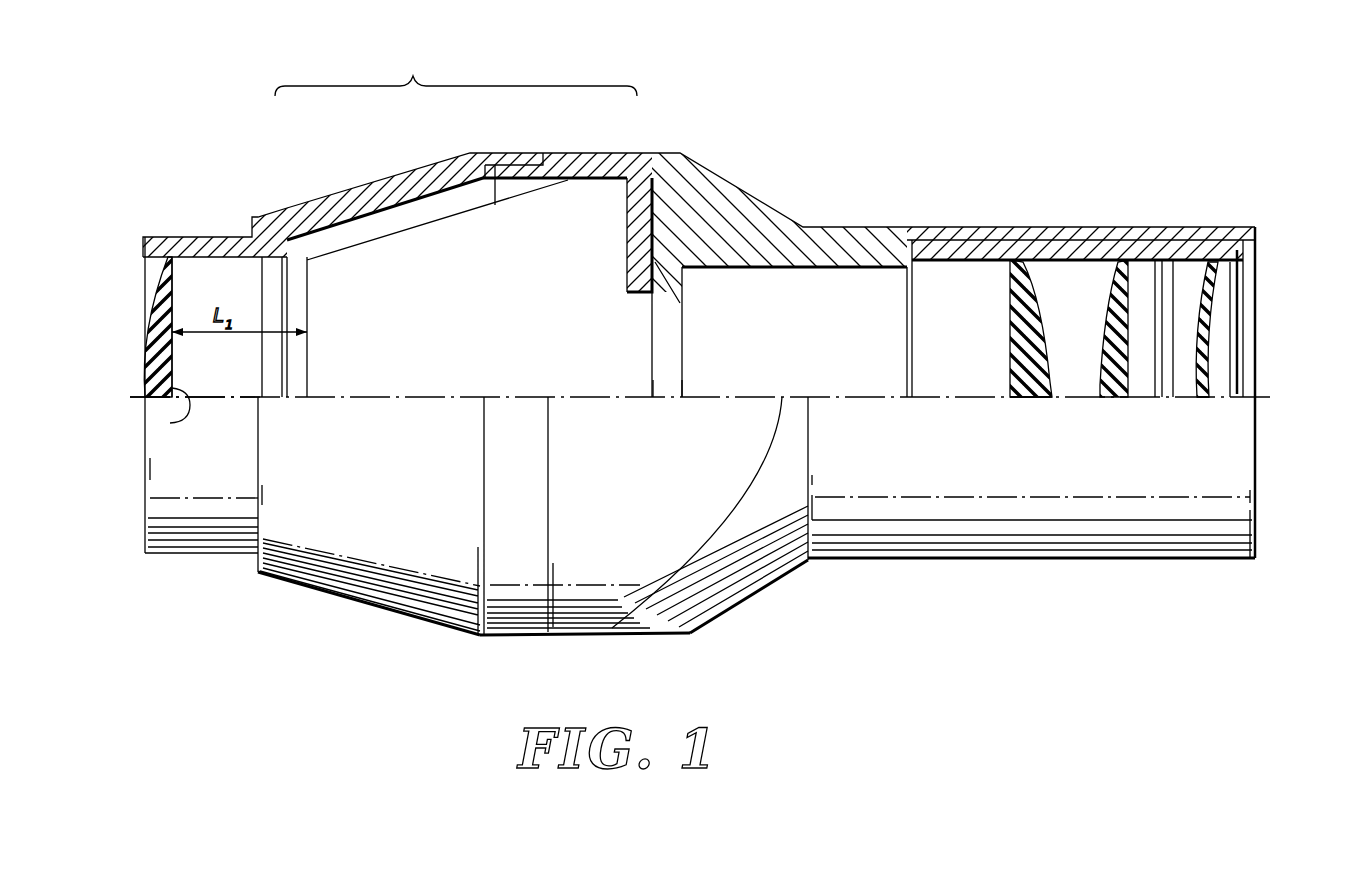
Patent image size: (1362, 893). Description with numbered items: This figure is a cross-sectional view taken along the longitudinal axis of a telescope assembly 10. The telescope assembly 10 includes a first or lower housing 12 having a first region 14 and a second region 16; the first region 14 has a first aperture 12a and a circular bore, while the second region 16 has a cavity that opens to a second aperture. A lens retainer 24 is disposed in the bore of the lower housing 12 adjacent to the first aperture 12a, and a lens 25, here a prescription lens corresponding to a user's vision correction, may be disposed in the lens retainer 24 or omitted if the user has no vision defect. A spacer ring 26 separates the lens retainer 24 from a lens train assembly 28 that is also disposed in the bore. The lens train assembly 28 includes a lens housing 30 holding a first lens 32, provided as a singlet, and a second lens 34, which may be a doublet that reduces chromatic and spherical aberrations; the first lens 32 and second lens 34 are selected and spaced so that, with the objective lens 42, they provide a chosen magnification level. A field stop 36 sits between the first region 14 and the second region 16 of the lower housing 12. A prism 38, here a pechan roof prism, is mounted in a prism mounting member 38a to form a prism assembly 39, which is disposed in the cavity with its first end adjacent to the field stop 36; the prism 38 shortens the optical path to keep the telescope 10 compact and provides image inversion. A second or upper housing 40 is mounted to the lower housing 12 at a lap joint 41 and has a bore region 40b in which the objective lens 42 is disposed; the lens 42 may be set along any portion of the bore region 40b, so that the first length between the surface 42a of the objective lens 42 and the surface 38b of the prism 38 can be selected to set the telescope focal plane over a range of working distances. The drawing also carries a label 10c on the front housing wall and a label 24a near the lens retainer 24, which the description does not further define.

The telescope assembly 10 is at (1121, 87).
The front housing wall 10c is at (126, 319).
The lower housing 12 is at (944, 150).
The first aperture 12a is at (1292, 242).
The first region 14 is at (1050, 163).
The second region 16 is at (736, 182).
The lens retainer 24 is at (1212, 262).
The retaining ring 24a is at (1248, 313).
The lens 25 is at (1208, 380).
The spacer ring 26 is at (1155, 262).
The lens train assembly 28 is at (1073, 238).
The lens housing 30 is at (1038, 255).
The first lens 32 is at (1112, 400).
The second lens 34 is at (1020, 400).
The field stop 36 is at (840, 287).
The prism 38 is at (418, 246).
The prism mounting member 38a is at (641, 200).
The surface of the prism 38b is at (302, 257).
The prism assembly 39 is at (456, 69).
The upper housing 40 is at (463, 162).
The bore region 40b is at (212, 290).
The lap joint 41 is at (534, 165).
The objective lens 42 is at (158, 292).
The surface of the objective lens 42a is at (170, 423).